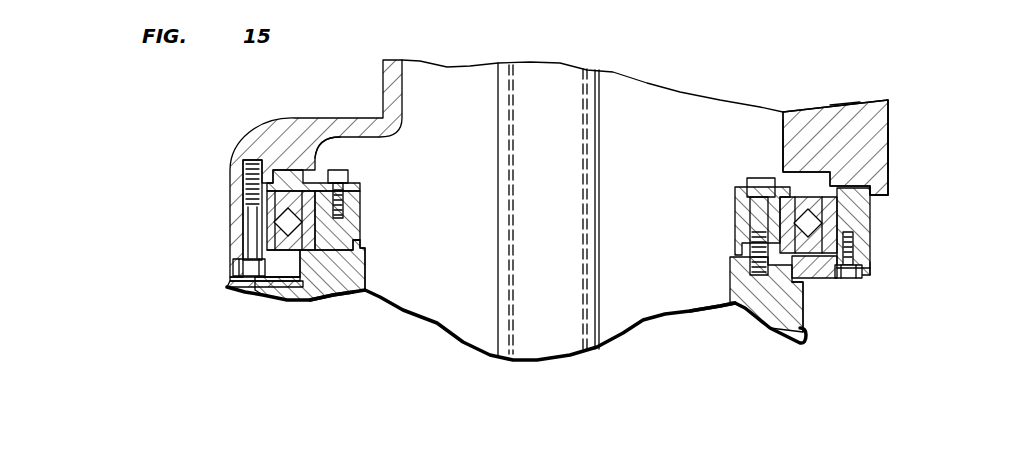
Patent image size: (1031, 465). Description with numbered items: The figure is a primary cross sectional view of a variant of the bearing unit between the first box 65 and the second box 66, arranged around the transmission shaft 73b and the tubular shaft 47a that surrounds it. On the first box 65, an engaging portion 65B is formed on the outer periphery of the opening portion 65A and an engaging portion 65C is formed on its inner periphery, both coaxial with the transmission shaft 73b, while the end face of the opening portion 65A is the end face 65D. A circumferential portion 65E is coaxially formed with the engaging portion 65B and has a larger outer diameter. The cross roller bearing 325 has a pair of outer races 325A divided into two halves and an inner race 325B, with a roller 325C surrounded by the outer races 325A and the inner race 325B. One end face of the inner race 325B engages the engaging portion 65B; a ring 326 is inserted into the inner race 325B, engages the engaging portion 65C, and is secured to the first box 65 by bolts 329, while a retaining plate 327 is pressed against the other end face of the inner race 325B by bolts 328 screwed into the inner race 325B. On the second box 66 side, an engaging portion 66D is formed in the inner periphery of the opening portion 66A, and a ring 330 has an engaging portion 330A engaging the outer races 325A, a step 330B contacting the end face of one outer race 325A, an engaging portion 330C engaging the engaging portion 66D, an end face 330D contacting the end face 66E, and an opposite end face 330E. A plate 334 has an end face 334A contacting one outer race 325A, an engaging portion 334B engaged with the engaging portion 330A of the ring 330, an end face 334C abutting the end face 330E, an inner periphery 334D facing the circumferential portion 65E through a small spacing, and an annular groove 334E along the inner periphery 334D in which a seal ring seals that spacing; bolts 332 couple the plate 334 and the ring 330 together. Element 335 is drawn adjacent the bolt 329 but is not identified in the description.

The first box 65 is at (805, 345).
The opening portion 65A is at (728, 288).
The engaging portion 65B is at (333, 300).
The engaging portion 65C is at (365, 252).
The end face 65D is at (363, 297).
The circumferential portion 65E is at (293, 302).
The second box 66 is at (393, 62).
The opening portion 66A is at (782, 138).
The engaging portion 66D is at (827, 170).
The end face 66E is at (890, 192).
The tubular shaft 47a is at (530, 73).
The transmission shaft 73b is at (570, 87).
The cross roller bearing 325 is at (256, 287).
The outer races 325A is at (267, 210).
The inner race 325B is at (336, 238).
The roller 325C is at (332, 220).
The ring 326 is at (363, 198).
The retaining plate 327 is at (338, 178).
The bolts 328 is at (333, 140).
The bolts 329 is at (760, 178).
The ring 330 is at (245, 268).
The engaging portion 330A is at (873, 207).
The step 330B is at (889, 116).
The engaging portion 330C is at (852, 125).
The end face 330D is at (890, 150).
The end face 330E is at (873, 268).
The bolts 332 is at (852, 278).
The plate 334 is at (878, 282).
The end face 334A is at (822, 258).
The engaging portion 334B is at (858, 253).
The end face 334C is at (858, 262).
The inner periphery 334D is at (757, 323).
The annular groove 334E is at (760, 290).
The bracket 335 is at (733, 266).